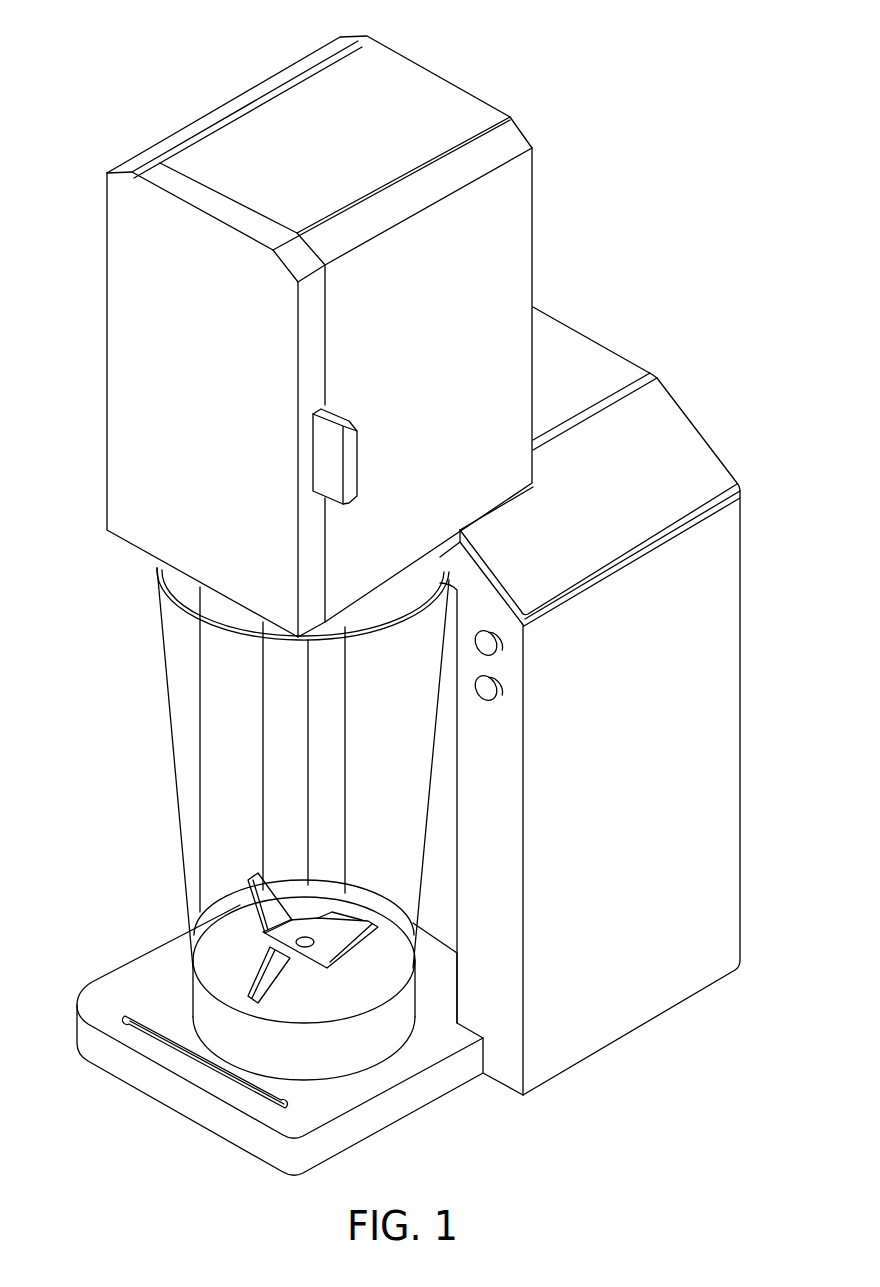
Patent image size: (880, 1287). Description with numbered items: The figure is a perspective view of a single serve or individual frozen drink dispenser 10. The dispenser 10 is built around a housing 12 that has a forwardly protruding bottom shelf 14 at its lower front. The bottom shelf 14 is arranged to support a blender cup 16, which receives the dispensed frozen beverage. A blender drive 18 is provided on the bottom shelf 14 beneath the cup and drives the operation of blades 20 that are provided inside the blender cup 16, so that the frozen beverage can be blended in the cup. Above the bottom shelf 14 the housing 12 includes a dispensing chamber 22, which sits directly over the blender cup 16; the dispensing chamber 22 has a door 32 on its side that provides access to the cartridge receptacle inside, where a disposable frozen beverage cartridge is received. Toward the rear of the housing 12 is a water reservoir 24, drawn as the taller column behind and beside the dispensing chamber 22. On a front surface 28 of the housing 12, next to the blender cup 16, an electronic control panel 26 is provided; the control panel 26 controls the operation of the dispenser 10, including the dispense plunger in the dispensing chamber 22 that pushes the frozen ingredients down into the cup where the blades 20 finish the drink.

The frozen drink dispenser 10 is at (653, 143).
The housing 12 is at (527, 970).
The bottom shelf 14 is at (104, 993).
The blender cup 16 is at (176, 671).
The blender drive 18 is at (318, 975).
The blades 20 is at (255, 883).
The dispensing chamber 22 is at (231, 133).
The water reservoir 24 is at (698, 717).
The electronic control panel 26 is at (493, 665).
The front surface 28 is at (490, 805).
The door 32 is at (156, 375).